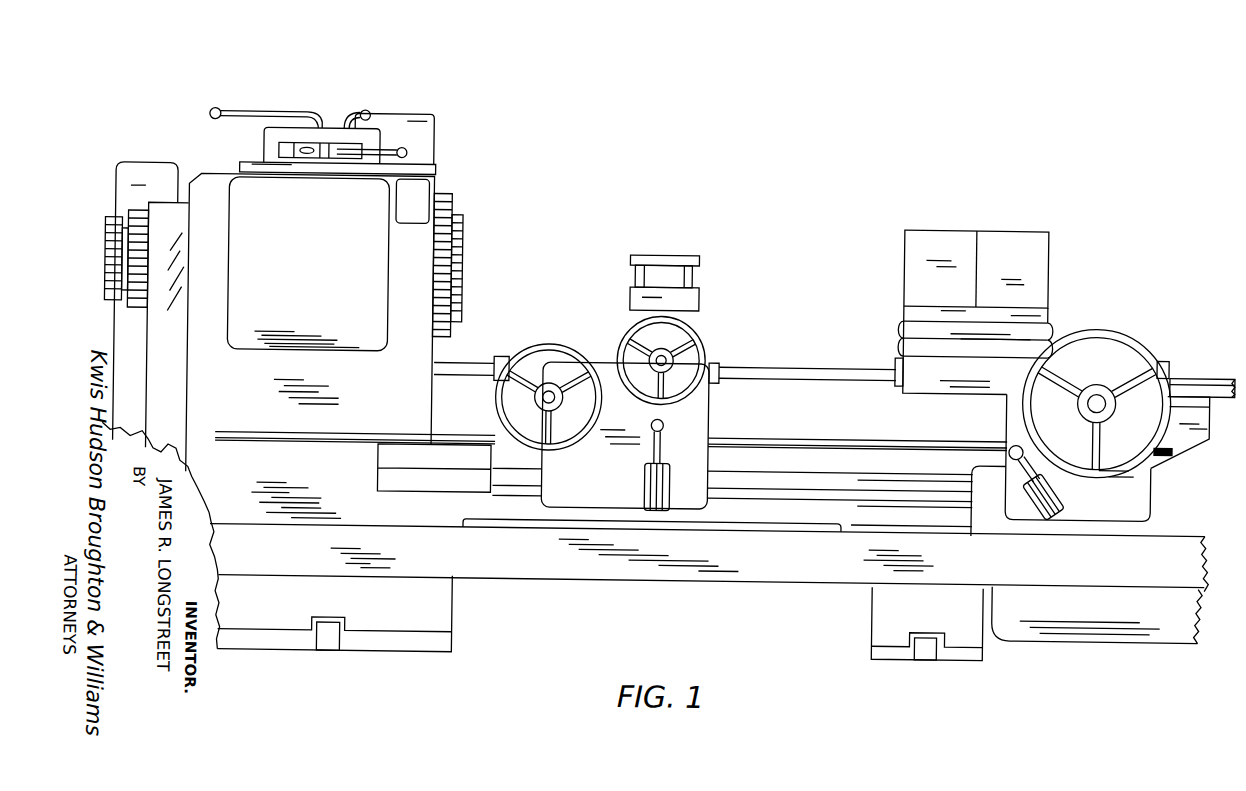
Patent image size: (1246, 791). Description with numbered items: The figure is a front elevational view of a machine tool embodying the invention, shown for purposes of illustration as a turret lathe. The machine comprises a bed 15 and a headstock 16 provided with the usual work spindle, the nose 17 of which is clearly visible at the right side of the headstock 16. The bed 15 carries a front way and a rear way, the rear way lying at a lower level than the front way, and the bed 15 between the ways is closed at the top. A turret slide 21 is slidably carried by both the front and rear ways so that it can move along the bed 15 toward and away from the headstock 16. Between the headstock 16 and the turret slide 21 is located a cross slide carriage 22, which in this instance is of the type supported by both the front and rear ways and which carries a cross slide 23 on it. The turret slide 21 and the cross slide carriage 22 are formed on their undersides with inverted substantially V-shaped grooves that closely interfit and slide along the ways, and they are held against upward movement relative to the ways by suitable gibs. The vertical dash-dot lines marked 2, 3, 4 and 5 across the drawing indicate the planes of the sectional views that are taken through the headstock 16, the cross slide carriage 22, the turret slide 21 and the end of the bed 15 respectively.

The bed 15 is at (812, 466).
The headstock 16 is at (246, 396).
The nose 17 is at (452, 261).
The turret slide 21 is at (915, 360).
The cross slide carriage 22 is at (601, 364).
The cross slide 23 is at (633, 316).
The section line 2- 2 is at (465, 689).
The section line 3- 3 is at (751, 649).
The section line 4- 4 is at (857, 683).
The section line 5- 5 is at (1193, 679).